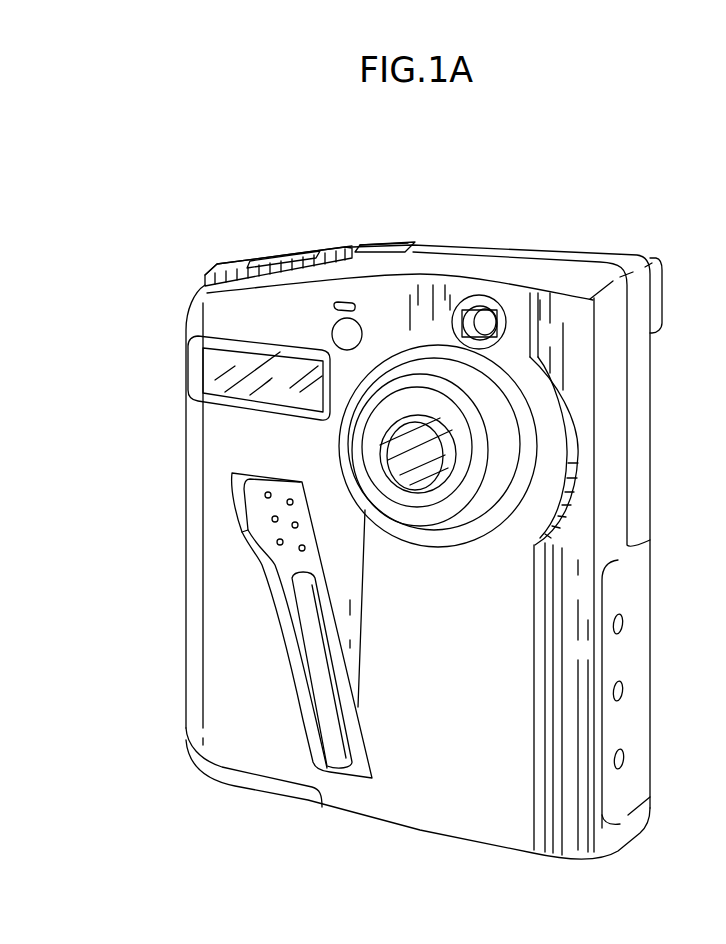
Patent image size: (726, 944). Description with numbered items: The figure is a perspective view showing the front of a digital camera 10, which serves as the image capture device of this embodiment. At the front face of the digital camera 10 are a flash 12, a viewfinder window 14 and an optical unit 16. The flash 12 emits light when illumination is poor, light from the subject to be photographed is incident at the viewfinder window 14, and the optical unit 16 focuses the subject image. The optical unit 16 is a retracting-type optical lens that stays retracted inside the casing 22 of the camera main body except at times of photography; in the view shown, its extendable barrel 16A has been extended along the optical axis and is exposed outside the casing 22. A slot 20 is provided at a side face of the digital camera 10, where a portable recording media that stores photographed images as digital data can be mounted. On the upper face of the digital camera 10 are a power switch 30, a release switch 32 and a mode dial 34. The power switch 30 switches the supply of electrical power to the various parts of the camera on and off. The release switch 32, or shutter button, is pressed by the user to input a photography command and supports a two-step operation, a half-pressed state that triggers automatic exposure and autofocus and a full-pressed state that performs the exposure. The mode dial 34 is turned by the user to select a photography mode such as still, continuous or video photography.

The digital camera 10 is at (527, 204).
The flash 12 is at (210, 369).
The viewfinder window 14 is at (478, 320).
The optical unit 16 is at (445, 533).
The extendable barrel 16A is at (488, 478).
The slot 20 is at (642, 720).
The casing 22 is at (447, 815).
The power switch 30 is at (371, 243).
The release switch 32 is at (268, 253).
The mode dial 34 is at (230, 267).